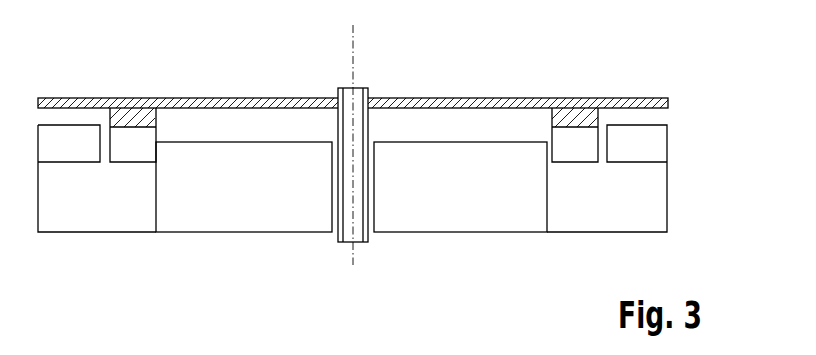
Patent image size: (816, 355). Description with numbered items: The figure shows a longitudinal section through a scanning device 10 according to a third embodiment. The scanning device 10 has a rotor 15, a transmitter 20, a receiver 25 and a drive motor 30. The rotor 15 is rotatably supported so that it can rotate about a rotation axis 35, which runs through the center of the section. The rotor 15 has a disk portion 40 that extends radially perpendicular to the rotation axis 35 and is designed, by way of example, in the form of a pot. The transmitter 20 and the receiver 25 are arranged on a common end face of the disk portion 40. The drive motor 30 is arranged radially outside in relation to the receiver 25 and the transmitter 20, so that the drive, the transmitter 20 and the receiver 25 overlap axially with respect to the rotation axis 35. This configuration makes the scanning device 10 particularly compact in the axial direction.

The scanning device 10 is at (371, 147).
The rotor 15 is at (536, 100).
The transmitter 20 is at (253, 160).
The receiver 25 is at (490, 158).
The drive motor 30 is at (626, 171).
The rotation axis 35 is at (352, 52).
The disk portion 40 is at (539, 175).